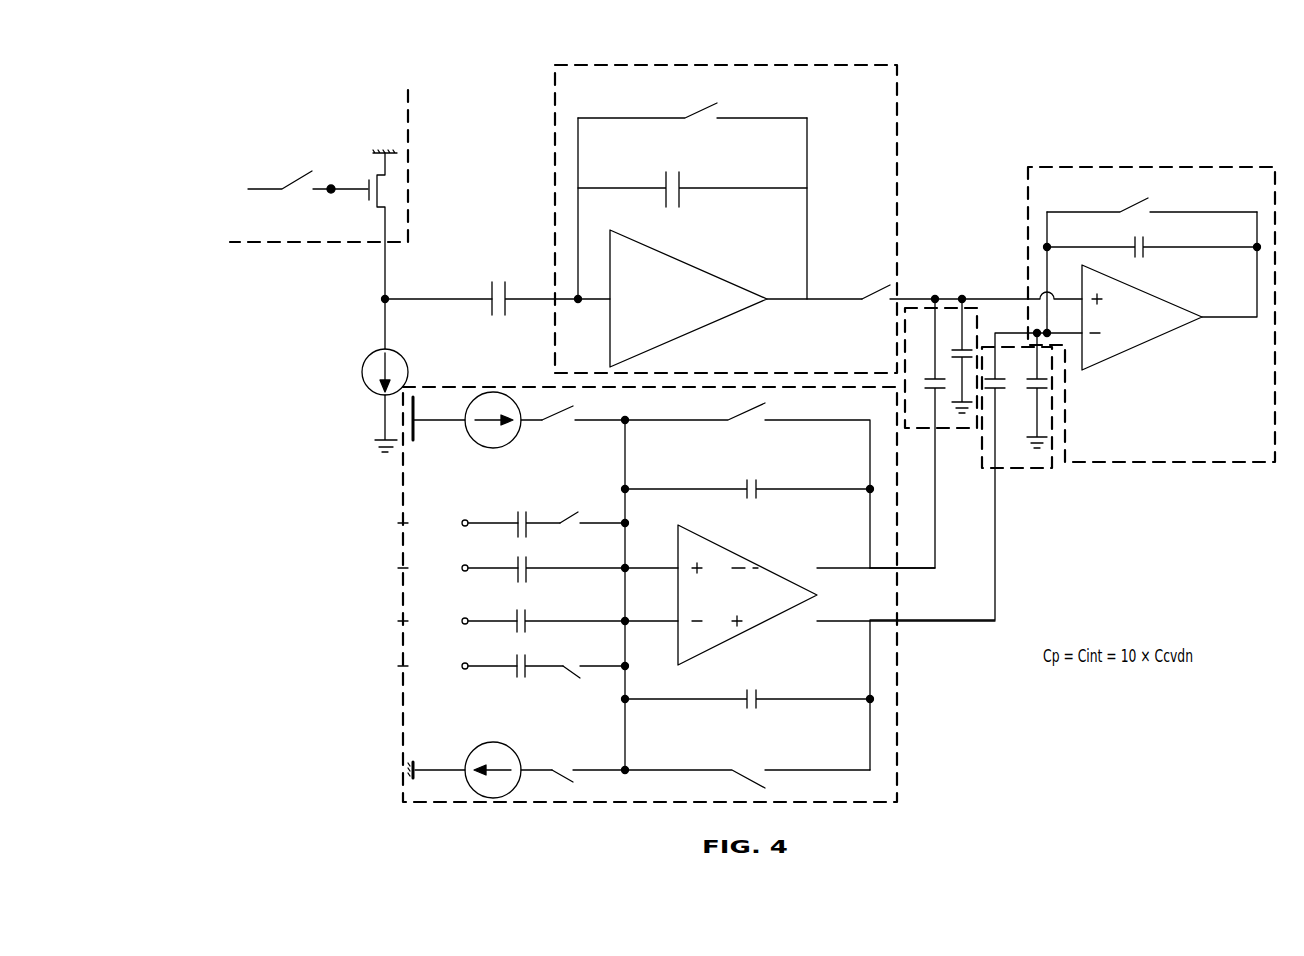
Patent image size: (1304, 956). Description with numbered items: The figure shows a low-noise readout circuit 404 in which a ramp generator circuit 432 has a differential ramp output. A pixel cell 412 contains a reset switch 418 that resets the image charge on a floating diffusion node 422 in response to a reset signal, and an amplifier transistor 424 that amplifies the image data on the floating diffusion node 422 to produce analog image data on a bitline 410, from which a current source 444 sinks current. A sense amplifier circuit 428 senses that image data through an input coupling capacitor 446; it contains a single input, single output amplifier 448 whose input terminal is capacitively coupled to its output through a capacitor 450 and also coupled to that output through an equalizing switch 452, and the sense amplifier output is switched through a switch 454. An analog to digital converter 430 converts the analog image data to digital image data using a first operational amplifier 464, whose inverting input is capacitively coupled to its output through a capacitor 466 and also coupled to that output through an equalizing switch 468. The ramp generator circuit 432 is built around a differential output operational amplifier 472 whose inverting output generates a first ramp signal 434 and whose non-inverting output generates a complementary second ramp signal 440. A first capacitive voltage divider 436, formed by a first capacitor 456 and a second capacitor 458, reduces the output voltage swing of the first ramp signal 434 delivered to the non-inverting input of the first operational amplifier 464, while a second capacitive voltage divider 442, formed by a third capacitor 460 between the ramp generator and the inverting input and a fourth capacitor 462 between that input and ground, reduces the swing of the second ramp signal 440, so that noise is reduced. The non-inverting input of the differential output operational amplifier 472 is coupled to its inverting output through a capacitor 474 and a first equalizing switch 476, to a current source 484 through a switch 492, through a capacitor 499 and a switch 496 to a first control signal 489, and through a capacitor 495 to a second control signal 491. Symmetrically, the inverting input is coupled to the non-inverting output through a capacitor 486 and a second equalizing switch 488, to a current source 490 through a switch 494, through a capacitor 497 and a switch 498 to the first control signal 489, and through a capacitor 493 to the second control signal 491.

The readout circuit 404 is at (1152, 88).
The pixel cell 412 is at (290, 243).
The reset switch 418 is at (272, 177).
The floating diffusion node 422 is at (333, 185).
The amplifier transistor SF 424 is at (366, 203).
The bitline 410 is at (383, 297).
The current source 444 is at (375, 353).
The input coupling capacitor Cin 446 is at (490, 283).
The sense amplifier circuit 428 is at (556, 72).
The amplifier SA1 448 is at (710, 272).
The capacitor C5 450 is at (688, 184).
The equalizing switch EQ 452 is at (688, 114).
The switch SP0 454 is at (864, 290).
The first capacitor C1 456 is at (924, 379).
The second capacitor C2 458 is at (963, 342).
The first capacitive voltage divider 436 is at (942, 428).
The second capacitive voltage divider 442 is at (1055, 462).
The fourth capacitor C4 462 is at (1047, 385).
The third capacitor C3 460 is at (995, 392).
The analog to digital converter 430 is at (1028, 174).
The first operational amplifier 464 is at (1168, 302).
The capacitor C6 466 is at (1128, 245).
The analog to digital converter equalizing switch AZ1 468 is at (1120, 210).
The ramp generator circuit 432 is at (403, 725).
The I_INTEG current source 484 is at (522, 438).
The switch S3 492 is at (574, 420).
The first differential output operational amplifier equalizing switch S1 476 is at (726, 419).
The capacitor Cint 474 is at (742, 488).
The CVDN1 signal 489 is at (398, 523).
The CVDN signal 491 is at (398, 568).
The capacitor Cp 499 is at (516, 516).
The switch S2 496 is at (577, 525).
The capacitor Ccvdn 495 is at (527, 575).
The capacitor Ccvdn 493 is at (516, 612).
The capacitor Cp 497 is at (515, 680).
The switch S2 498 is at (578, 663).
The differential output operational amplifier 472 is at (735, 555).
The first ramp signal RAMP_SIGNAL 434 is at (818, 540).
The second ramp signal RAMP_SIGNAL' 440 is at (808, 645).
The capacitor Cint 486 is at (742, 708).
The second differential output operational amplifier equalizing switch S1 488 is at (732, 776).
The I_INTEG current source 490 is at (520, 760).
The switch S3 494 is at (571, 771).